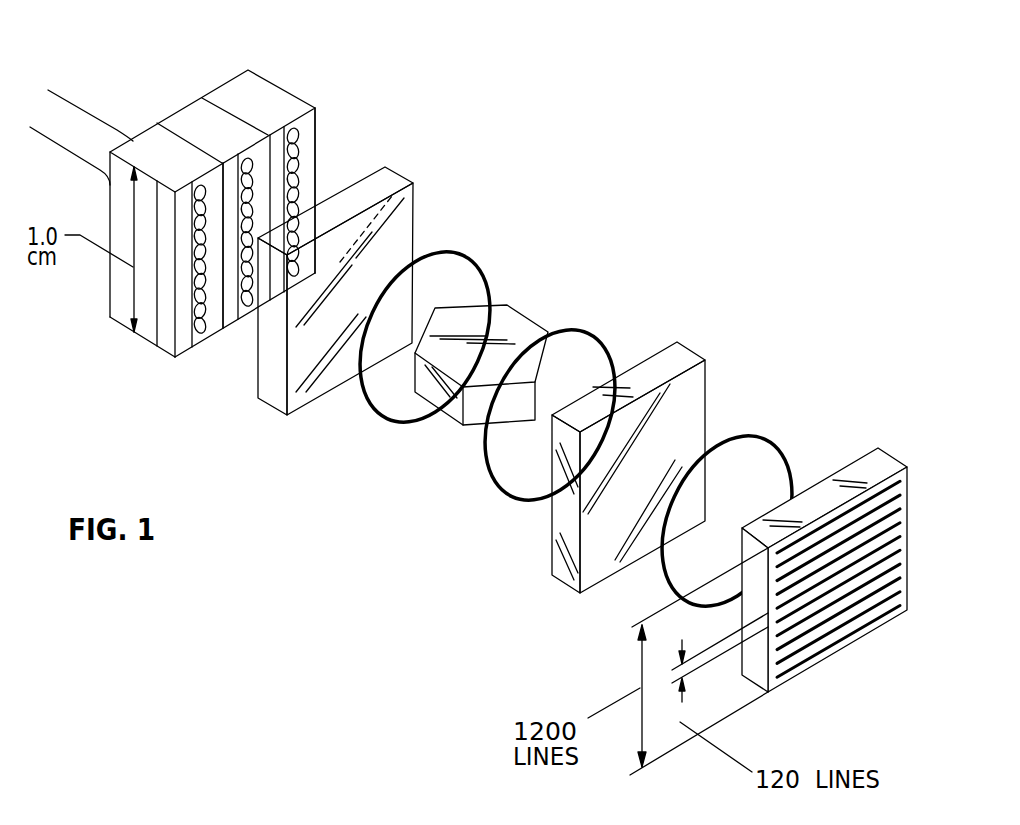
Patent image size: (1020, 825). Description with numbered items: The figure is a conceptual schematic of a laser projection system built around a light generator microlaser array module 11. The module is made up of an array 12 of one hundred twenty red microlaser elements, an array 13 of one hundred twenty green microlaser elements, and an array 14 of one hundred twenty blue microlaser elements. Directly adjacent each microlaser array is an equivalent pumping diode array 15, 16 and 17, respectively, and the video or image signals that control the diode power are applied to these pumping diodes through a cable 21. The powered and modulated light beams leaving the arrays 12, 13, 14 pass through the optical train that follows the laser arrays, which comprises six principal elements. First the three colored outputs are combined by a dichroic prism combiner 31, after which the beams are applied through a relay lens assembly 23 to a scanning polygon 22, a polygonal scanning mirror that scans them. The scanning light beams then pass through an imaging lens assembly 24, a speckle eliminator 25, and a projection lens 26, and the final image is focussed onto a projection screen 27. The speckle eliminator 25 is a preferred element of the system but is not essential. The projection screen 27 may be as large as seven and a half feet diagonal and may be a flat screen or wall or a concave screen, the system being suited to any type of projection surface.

The light generator microlaser array module 11 is at (292, 57).
The array of red microlaser elements 12 is at (187, 352).
The array of green microlaser elements 13 is at (233, 320).
The array of blue microlaser elements 14 is at (316, 132).
The pumping diode array 15 is at (152, 147).
The pumping diode array 16 is at (197, 117).
The pumping diode array 17 is at (242, 87).
The cable 21 is at (44, 136).
The scanning polygon 22 is at (525, 322).
The relay lens assembly 23 is at (463, 258).
The imaging lens assembly 24 is at (592, 342).
The speckle eliminator 25 is at (707, 360).
The projection lens 26 is at (768, 442).
The projection screen 27 is at (873, 628).
The dichroic prism combiner 31 is at (318, 396).